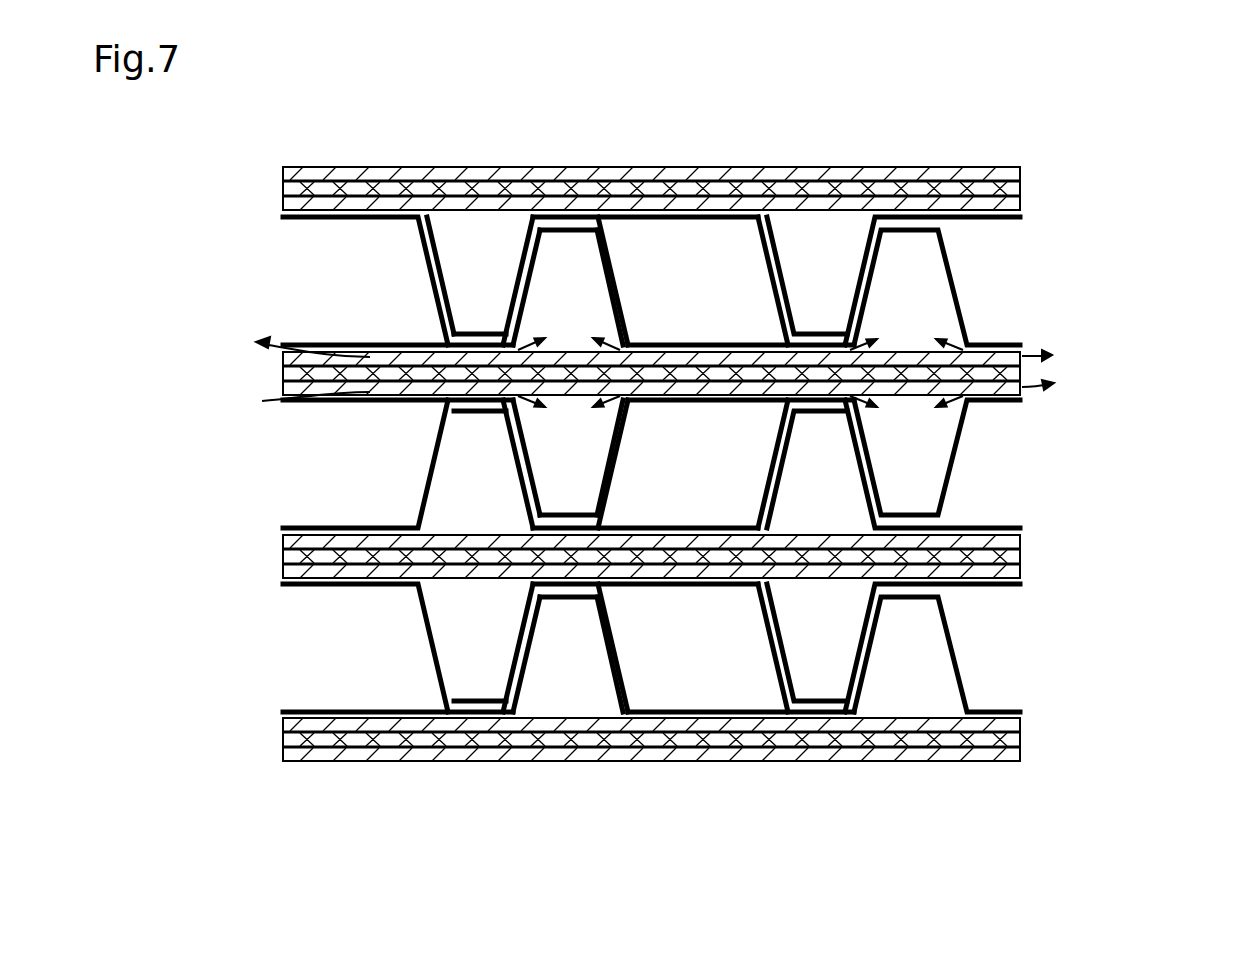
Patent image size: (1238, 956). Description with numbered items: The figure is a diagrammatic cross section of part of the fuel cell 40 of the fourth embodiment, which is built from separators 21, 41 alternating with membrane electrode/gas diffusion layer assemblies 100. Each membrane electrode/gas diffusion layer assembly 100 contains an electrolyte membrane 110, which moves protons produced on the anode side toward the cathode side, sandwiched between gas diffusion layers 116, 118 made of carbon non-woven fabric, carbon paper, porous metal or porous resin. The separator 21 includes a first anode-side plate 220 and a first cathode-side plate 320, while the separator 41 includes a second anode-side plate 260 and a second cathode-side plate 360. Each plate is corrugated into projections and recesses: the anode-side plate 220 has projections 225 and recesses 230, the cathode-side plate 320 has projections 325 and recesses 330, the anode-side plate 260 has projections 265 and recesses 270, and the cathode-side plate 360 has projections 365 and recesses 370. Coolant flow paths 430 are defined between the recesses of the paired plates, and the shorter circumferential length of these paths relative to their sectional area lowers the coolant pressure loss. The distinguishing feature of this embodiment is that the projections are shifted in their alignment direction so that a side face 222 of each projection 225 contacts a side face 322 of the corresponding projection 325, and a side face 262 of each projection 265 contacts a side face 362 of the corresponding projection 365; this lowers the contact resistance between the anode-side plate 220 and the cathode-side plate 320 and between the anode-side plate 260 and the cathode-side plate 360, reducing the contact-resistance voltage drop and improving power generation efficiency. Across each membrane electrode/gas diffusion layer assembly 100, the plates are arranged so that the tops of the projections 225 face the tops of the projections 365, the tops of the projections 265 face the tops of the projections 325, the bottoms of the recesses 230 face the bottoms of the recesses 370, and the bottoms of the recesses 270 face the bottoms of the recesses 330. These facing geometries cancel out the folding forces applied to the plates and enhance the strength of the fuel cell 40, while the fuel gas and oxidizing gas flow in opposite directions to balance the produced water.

The fuel cell 40 is at (744, 422).
The membrane electrode/gas diffusion layer assembly 100 is at (757, 428).
The electrolyte membrane 110 is at (1022, 190).
The gas diffusion layer 116 is at (750, 462).
The gas diffusion layer 118 is at (1022, 171).
The separator 21 is at (1097, 226).
The separator 41 is at (1097, 420).
The anode-side plate 220 is at (1018, 220).
The side face 222 is at (523, 256).
The projection 225 is at (457, 333).
The recess 230 is at (753, 222).
The cathode-side plate 320 is at (1018, 345).
The side face 322 is at (532, 276).
The projection 325 is at (592, 234).
The recess 330 is at (648, 342).
The coolant flow path 430 is at (342, 309).
The anode-side plate 260 is at (1018, 403).
The side face 262 is at (527, 420).
The projection 265 is at (584, 515).
The recess 270 is at (754, 403).
The cathode-side plate 360 is at (1018, 527).
The side face 362 is at (512, 471).
The projection 365 is at (456, 413).
The recess 370 is at (661, 527).